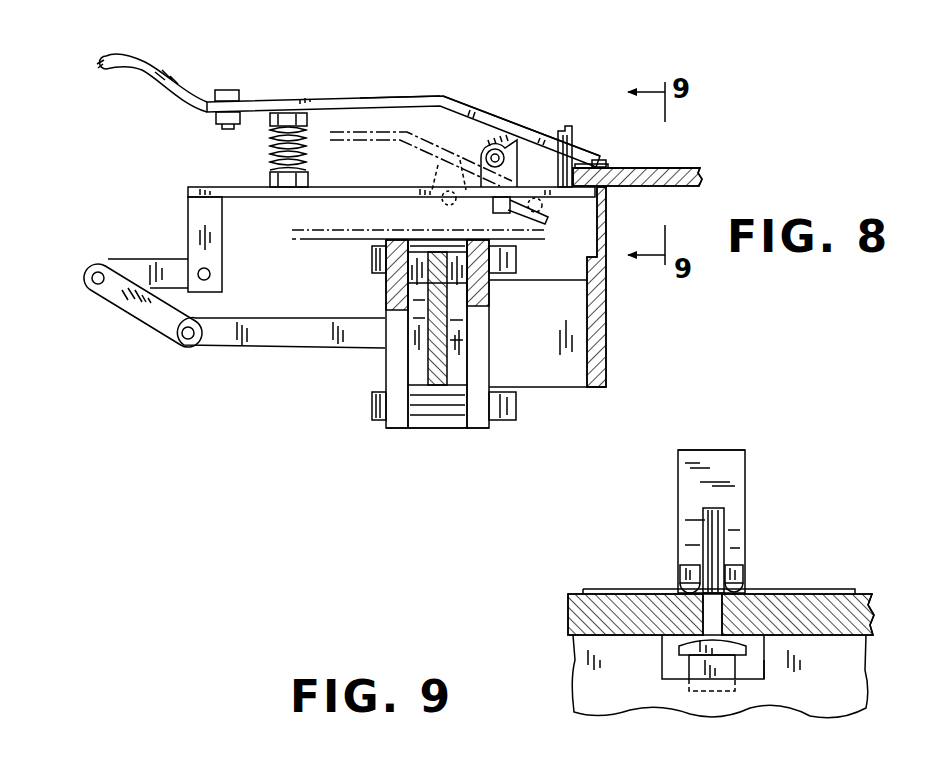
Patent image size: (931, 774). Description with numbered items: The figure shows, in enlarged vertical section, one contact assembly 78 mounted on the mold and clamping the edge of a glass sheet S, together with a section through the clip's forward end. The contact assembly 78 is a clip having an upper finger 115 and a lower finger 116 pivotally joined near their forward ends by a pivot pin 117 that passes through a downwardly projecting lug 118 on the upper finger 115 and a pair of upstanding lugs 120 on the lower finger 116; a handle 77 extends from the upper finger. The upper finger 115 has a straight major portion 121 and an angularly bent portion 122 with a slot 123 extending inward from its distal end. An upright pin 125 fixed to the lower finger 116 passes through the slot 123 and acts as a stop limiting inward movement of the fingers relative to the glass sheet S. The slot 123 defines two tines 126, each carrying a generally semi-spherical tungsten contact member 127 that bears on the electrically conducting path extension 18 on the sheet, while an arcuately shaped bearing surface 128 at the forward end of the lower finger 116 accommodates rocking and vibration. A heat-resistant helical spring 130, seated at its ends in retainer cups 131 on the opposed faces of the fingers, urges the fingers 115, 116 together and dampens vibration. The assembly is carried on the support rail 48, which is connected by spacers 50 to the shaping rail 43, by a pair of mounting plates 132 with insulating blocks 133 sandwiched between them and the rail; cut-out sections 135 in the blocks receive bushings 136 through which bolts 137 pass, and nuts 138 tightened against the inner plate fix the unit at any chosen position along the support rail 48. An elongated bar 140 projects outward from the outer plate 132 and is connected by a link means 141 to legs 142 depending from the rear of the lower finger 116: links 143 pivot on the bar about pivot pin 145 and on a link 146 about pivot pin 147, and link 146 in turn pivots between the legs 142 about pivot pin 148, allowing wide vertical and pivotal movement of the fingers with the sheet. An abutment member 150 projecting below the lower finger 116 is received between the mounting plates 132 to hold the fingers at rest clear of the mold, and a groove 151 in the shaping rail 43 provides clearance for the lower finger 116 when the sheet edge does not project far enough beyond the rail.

In FIG. 8, the path extension 18 is at (600, 167).
In FIG. 9, the path extension 18 is at (828, 592).
In FIG. 8, the shaping rail 43 is at (606, 330).
In FIG. 9, the shaping rail 43 is at (582, 658).
In FIG. 8, the support rail 48 is at (435, 355).
In FIG. 8, the spacers 50 is at (565, 370).
In FIG. 8, the handle 77 is at (127, 56).
In FIG. 8, the contact assembly 78 is at (560, 84).
In FIG. 8, the upper finger 115 is at (330, 98).
In FIG. 9, the upper finger 115 is at (750, 462).
In FIG. 8, the lower finger 116 is at (332, 240).
In FIG. 9, the lower finger 116 is at (672, 665).
In FIG. 8, the pivot pin 117 is at (497, 152).
In FIG. 8, the downwardly projecting lug 118 is at (484, 140).
In FIG. 8, the upstanding lugs 120 is at (478, 160).
In FIG. 8, the straight major portion 121 is at (368, 97).
In FIG. 8, the bent portion 122 is at (462, 99).
In FIG. 9, the bent portion 122 is at (688, 474).
In FIG. 9, the slot 123 is at (708, 565).
In FIG. 8, the upright pin 125 is at (565, 125).
In FIG. 9, the upright pin 125 is at (712, 508).
In FIG. 8, the tines 126 is at (584, 160).
In FIG. 9, the tines 126 is at (688, 575).
In FIG. 8, the contact member 127 is at (578, 164).
In FIG. 9, the contact member 127 is at (682, 588).
In FIG. 9, the bearing surface 128 is at (740, 640).
In FIG. 8, the helical spring 130 is at (308, 150).
In FIG. 8, the retainer cups 131 is at (268, 175).
In FIG. 8, the mounting plates 132 is at (396, 424).
In FIG. 8, the insulating blocks 133 is at (458, 325).
In FIG. 8, the cut-out sections 135 is at (402, 280).
In FIG. 8, the bushings 136 is at (432, 244).
In FIG. 8, the bolts 137 is at (378, 258).
In FIG. 8, the nuts 138 is at (512, 272).
In FIG. 8, the elongated bar 140 is at (258, 348).
In FIG. 8, the link means 141 is at (90, 312).
In FIG. 8, the legs 142 is at (196, 225).
In FIG. 8, the links 143 is at (137, 312).
In FIG. 8, the pivot pin 145 is at (184, 342).
In FIG. 8, the link 146 is at (145, 270).
In FIG. 8, the pivot pin 147 is at (92, 270).
In FIG. 8, the pivot pin 148 is at (210, 273).
In FIG. 8, the abutment member 150 is at (525, 214).
In FIG. 9, the abutment member 150 is at (700, 662).
In FIG. 8, the groove 151 is at (606, 210).
In FIG. 9, the groove 151 is at (764, 665).
In FIG. 8, the glass sheet S is at (685, 168).
In FIG. 9, the glass sheet S is at (582, 608).